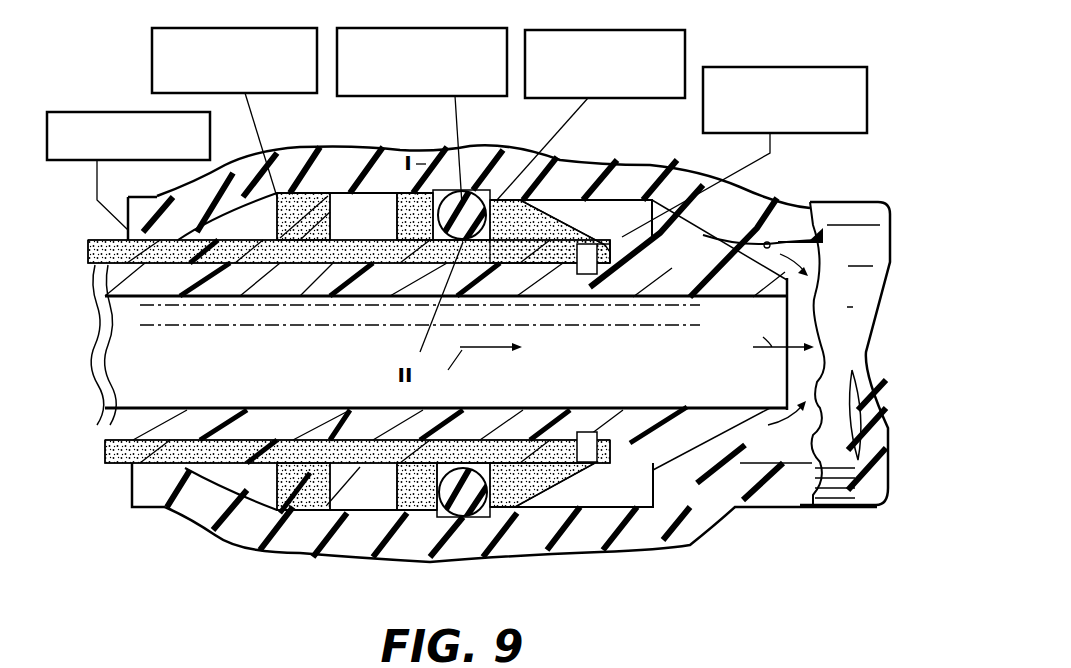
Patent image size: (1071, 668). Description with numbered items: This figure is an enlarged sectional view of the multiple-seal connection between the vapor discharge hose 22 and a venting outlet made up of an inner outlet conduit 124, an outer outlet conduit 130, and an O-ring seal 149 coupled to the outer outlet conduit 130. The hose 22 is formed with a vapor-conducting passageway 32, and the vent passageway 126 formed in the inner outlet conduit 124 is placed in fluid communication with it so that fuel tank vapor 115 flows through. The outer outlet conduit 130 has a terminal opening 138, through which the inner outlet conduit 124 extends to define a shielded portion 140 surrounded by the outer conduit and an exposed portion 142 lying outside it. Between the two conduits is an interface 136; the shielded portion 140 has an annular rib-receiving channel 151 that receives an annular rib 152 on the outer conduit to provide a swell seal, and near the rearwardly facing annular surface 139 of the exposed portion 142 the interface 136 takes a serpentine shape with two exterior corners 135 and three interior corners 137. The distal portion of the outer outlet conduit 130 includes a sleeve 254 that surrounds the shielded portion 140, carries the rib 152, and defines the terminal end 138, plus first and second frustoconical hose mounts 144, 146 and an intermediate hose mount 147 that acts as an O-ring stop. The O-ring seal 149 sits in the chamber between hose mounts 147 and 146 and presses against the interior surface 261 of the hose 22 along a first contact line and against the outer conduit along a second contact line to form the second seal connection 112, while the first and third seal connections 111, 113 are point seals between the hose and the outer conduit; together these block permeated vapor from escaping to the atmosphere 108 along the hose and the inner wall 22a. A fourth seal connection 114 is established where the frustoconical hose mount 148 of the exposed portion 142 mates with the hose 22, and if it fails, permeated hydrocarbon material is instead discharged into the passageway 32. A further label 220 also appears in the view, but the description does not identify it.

The vapor discharge hose 22 is at (772, 195).
The inner wall 22a is at (777, 248).
The vapor-conducting passageway 32 is at (803, 452).
The atmosphere 108 is at (72, 112).
The first seal connection 111 is at (624, 98).
The second seal connection 112 is at (393, 92).
The third seal connection 113 is at (150, 68).
The fourth seal connection 114 is at (797, 67).
The fuel tank vapor 115 is at (625, 356).
The inner outlet conduit 124 is at (203, 411).
The vent passageway 126 is at (203, 347).
The outer outlet conduit 130 is at (123, 473).
The exterior corners 135 is at (640, 497).
The interface 136 is at (320, 267).
The interior corners 137 is at (575, 430).
The terminal opening 138 is at (643, 258).
The rearwardly facing annular surface 139 is at (606, 240).
The shielded portion 140 is at (367, 293).
The exposed portion 142 is at (707, 297).
The first frustoconical annular hose mount 144 is at (310, 213).
The second frustoconical annular hose mount 146 is at (520, 213).
The intermediate annular hose mount 147 is at (405, 200).
The frustoconical annular hose mount 148 is at (730, 195).
The O-ring seal 149 is at (465, 200).
The annular rib-receiving channel 151 is at (563, 280).
The annular rib 152 is at (587, 297).
The seal assembly 220 is at (78, 267).
The sleeve 254 is at (187, 257).
The interior surface 261 is at (335, 200).